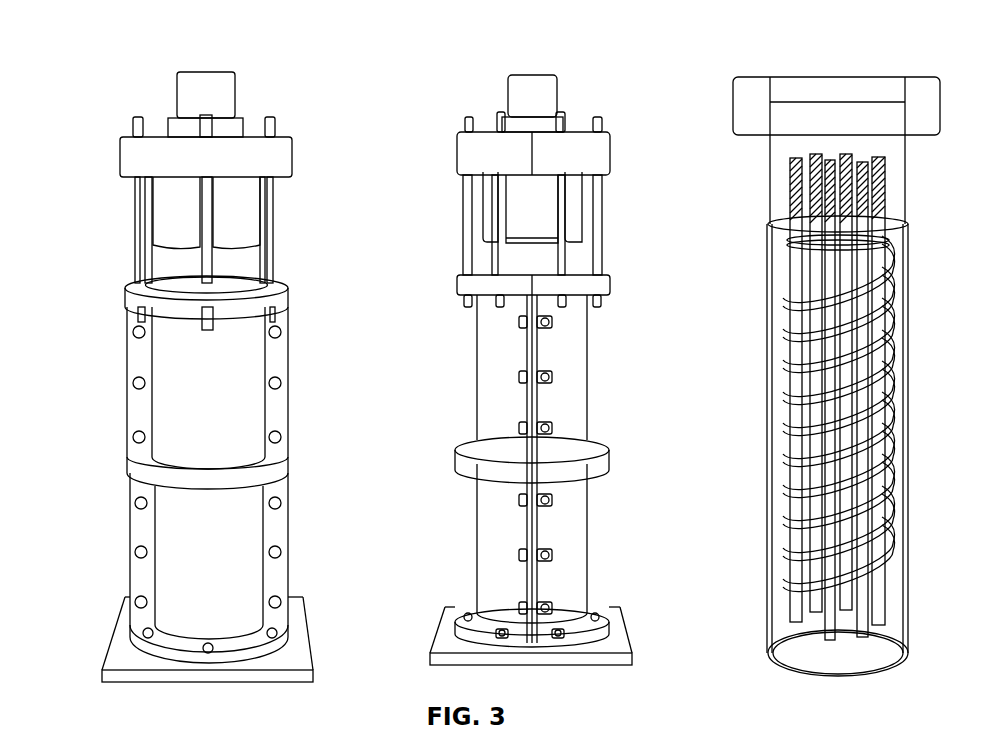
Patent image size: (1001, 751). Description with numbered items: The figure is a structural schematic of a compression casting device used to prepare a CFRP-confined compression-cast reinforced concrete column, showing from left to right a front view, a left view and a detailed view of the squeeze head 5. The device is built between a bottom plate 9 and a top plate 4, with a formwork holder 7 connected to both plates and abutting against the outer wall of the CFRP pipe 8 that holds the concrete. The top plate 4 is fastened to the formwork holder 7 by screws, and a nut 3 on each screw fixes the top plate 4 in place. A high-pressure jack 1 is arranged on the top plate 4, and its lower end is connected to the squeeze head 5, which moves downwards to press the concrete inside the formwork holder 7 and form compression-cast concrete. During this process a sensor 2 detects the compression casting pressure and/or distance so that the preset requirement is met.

The high-pressure jack 1 is at (235, 83).
The sensor 2 is at (243, 129).
The nut 3 is at (133, 123).
The top plate 4 is at (120, 154).
The squeeze head 5 is at (220, 204).
The formwork holder 7 is at (273, 240).
The CFRP pipe 8 is at (242, 383).
The bottom plate 9 is at (127, 643).